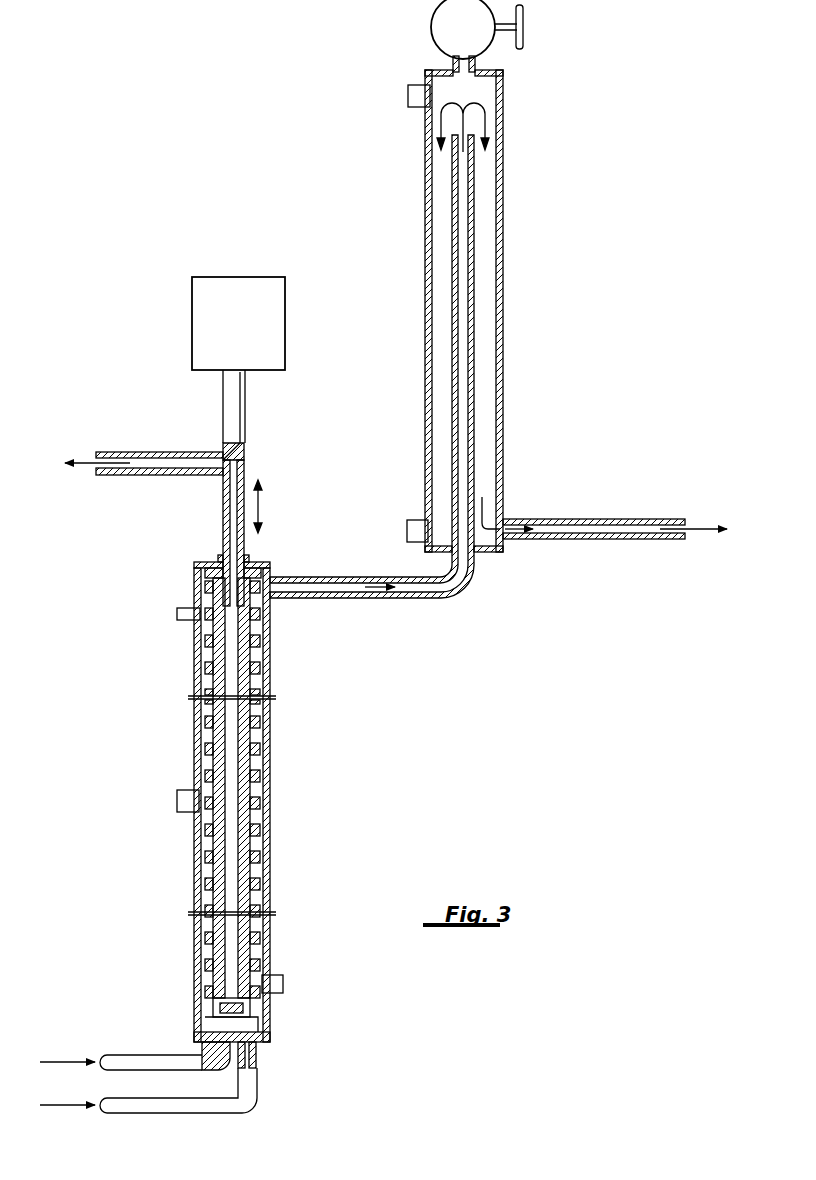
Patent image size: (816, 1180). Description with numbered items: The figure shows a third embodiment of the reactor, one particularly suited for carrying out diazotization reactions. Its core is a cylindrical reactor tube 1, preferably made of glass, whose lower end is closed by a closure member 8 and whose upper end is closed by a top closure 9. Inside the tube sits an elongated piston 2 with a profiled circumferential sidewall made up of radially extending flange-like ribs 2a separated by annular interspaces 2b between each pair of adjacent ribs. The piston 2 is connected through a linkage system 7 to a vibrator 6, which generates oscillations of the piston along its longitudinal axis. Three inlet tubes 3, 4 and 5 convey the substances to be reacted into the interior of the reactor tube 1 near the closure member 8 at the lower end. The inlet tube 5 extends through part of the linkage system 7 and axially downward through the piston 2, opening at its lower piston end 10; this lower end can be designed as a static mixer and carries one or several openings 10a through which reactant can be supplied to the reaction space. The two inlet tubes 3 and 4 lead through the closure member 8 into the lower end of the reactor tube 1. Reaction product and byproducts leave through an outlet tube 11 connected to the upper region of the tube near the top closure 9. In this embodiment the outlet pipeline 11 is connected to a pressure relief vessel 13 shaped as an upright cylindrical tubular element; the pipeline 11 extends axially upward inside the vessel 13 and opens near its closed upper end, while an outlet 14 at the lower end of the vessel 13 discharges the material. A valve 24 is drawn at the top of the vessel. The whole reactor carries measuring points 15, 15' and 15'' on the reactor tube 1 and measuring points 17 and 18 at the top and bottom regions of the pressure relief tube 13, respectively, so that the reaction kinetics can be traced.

The reactor tube 1 is at (270, 835).
The piston 2 is at (268, 757).
The flange-like ribs 2a is at (257, 672).
The annular interspaces 2b is at (257, 737).
The inlet tube 3 is at (130, 1056).
The inlet tube 4 is at (135, 1112).
The inlet tube 5 is at (200, 455).
The vibrator 6 is at (285, 311).
The linkage system 7 is at (237, 421).
The closure member 8 is at (256, 1046).
The top closure 9 is at (212, 562).
The lower piston end 10 is at (248, 1009).
The openings 10a is at (213, 1008).
The outlet tube 11 is at (328, 598).
The pressure relief vessel 13 is at (503, 271).
The outlet 14 is at (612, 519).
The measuring point 15 is at (301, 985).
The measuring point 15' is at (153, 802).
The measuring point 15'' is at (162, 608).
The measuring point 17 is at (408, 95).
The measuring point 18 is at (410, 520).
The valve 24 is at (440, 25).